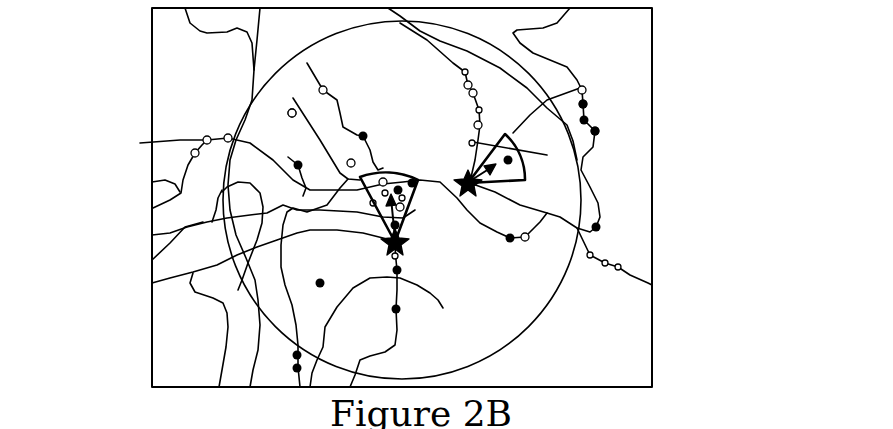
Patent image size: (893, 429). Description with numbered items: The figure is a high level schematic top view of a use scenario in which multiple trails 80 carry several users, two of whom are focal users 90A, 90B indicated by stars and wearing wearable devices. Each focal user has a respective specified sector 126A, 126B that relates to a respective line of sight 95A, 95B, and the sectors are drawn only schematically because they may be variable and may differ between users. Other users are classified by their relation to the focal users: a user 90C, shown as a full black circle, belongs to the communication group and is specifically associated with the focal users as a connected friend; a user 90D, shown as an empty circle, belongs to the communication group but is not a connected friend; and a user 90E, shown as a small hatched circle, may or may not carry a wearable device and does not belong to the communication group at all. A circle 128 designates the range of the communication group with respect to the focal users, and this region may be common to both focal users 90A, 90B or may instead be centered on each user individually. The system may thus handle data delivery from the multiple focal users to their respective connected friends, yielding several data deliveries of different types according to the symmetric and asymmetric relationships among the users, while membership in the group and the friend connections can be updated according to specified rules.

The trails 80 is at (152, 182).
The circle 128 is at (520, 336).
The focal user 90A is at (152, 283).
The focal user 90B is at (547, 213).
The user 90C is at (597, 127).
The user 90D is at (587, 90).
The user 90E is at (292, 113).
The line of sight 95A is at (152, 235).
The line of sight 95B is at (525, 182).
The specified sector 126A is at (140, 143).
The specified sector 126B is at (580, 88).